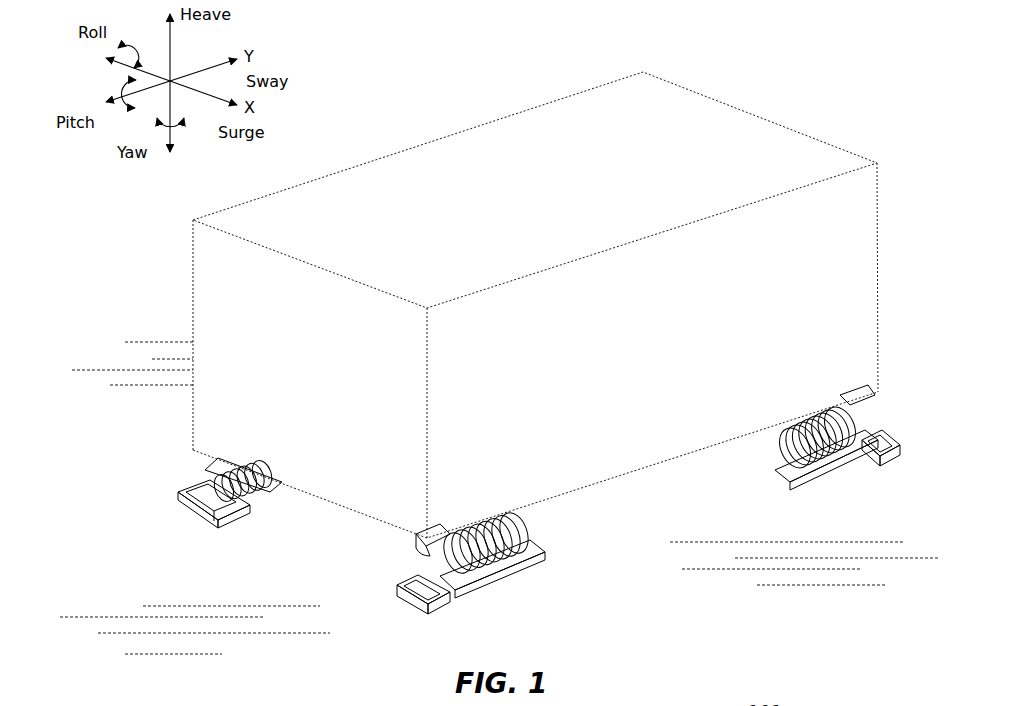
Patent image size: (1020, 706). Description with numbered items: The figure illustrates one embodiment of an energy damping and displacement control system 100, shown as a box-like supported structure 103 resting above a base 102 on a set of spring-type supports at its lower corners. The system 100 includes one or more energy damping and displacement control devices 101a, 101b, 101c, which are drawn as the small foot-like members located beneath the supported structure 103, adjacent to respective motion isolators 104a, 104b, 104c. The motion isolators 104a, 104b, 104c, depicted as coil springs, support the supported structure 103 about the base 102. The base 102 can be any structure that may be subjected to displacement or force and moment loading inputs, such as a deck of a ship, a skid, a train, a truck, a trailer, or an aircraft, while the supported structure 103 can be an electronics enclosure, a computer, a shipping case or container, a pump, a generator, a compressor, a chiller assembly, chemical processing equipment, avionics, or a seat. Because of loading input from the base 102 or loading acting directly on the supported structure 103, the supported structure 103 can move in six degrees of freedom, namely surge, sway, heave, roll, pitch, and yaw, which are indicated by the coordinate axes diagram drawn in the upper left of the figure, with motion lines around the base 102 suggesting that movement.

The energy damping and displacement control system 100 is at (422, 56).
The energy damping and displacement control device 101a is at (173, 480).
The energy damping and displacement control device 101b is at (436, 620).
The energy damping and displacement control device 101c is at (885, 418).
The base 102 is at (535, 465).
The supported structure 103 is at (447, 122).
The motion isolator 104a is at (278, 500).
The motion isolator 104b is at (541, 534).
The motion isolator 104c is at (766, 466).